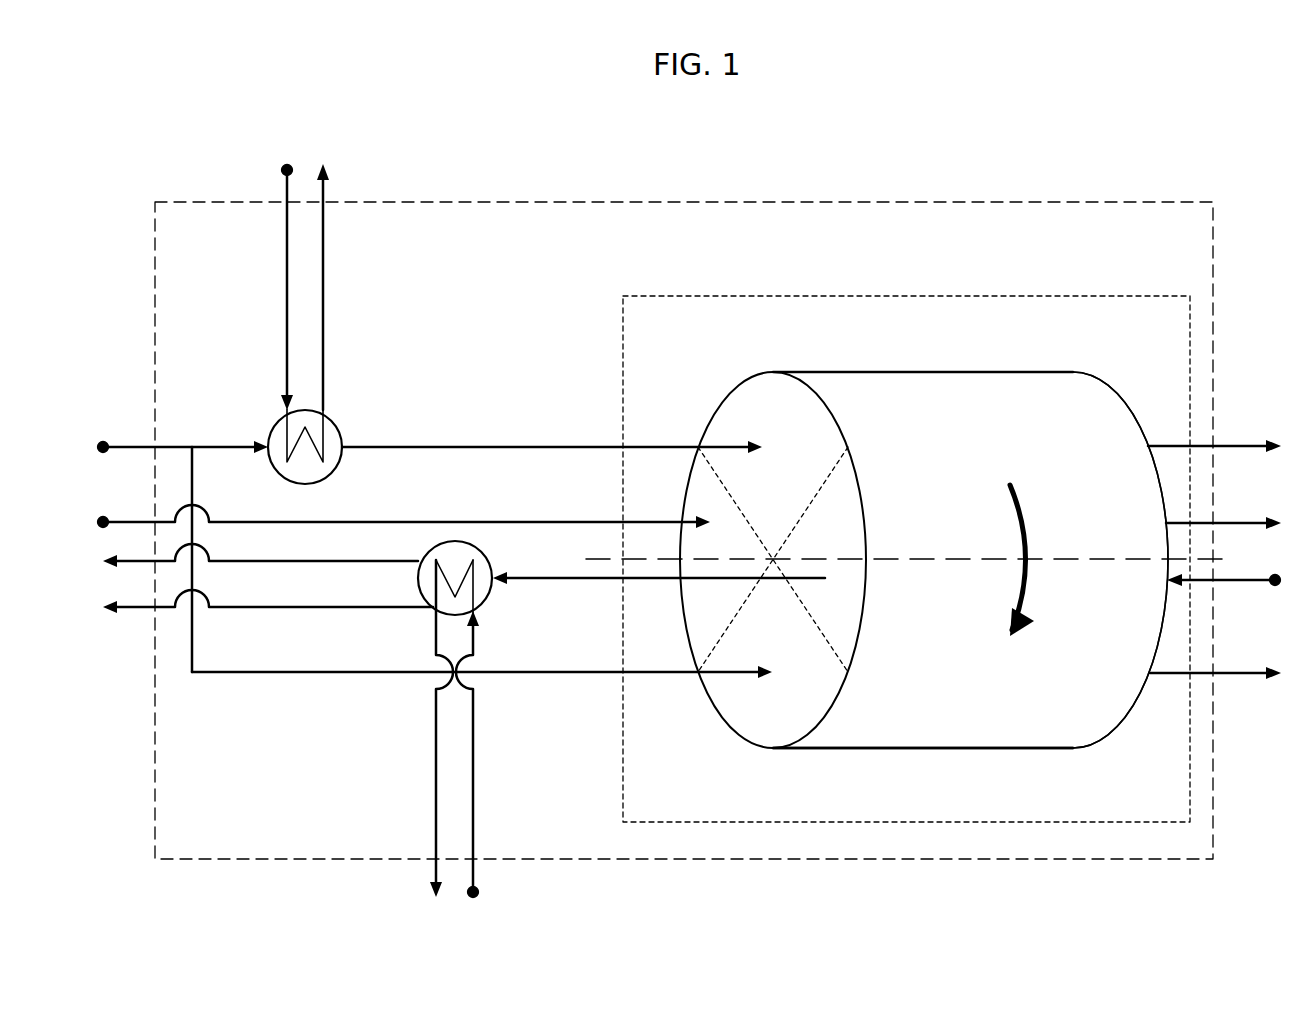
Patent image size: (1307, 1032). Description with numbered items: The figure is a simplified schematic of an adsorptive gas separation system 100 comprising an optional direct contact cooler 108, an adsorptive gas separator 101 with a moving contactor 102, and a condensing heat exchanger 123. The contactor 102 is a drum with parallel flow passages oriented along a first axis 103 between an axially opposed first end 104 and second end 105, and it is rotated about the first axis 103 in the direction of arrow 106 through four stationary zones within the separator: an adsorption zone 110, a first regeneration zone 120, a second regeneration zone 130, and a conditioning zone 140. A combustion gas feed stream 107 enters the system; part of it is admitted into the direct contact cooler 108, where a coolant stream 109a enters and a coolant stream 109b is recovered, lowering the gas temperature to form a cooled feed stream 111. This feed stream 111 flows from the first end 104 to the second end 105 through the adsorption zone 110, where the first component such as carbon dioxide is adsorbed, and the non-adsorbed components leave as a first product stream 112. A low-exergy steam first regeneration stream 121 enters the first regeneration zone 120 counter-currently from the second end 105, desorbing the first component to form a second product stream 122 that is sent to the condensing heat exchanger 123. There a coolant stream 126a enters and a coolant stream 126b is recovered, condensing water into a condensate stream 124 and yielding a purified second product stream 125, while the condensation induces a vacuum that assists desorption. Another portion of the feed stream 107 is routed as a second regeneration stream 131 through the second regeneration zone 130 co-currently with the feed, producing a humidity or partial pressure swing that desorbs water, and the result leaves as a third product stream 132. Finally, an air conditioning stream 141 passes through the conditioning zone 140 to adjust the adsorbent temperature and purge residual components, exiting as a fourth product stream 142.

The adsorptive gas separation system 100 is at (512, 202).
The adsorptive gas separator 101 is at (712, 296).
The contactor 102 is at (952, 385).
The first axis 103 is at (605, 558).
The first end 104 is at (825, 718).
The second end 105 is at (1125, 718).
The arrow 106 is at (1010, 485).
The feed stream 107 is at (142, 446).
The direct contact cooler 108 is at (281, 416).
The coolant stream 109a is at (286, 325).
The coolant stream 109b is at (324, 325).
The adsorption zone 110 is at (768, 413).
The feed stream 111 is at (488, 445).
The first product stream 112 is at (1233, 446).
The first regeneration zone 120 is at (825, 520).
The first regeneration stream 121 is at (1233, 580).
The second product stream 122 is at (592, 580).
The condensing heat exchanger 123 is at (481, 607).
The condensate stream 124 is at (140, 609).
The purified second product stream 125 is at (139, 563).
The coolant stream 126a is at (474, 785).
The coolant stream 126b is at (435, 785).
The second regeneration zone 130 is at (765, 690).
The second regeneration stream 131 is at (285, 673).
The third product stream 132 is at (1233, 673).
The conditioning zone 140 is at (710, 604).
The conditioning stream 141 is at (140, 521).
The fourth product stream 142 is at (1233, 523).